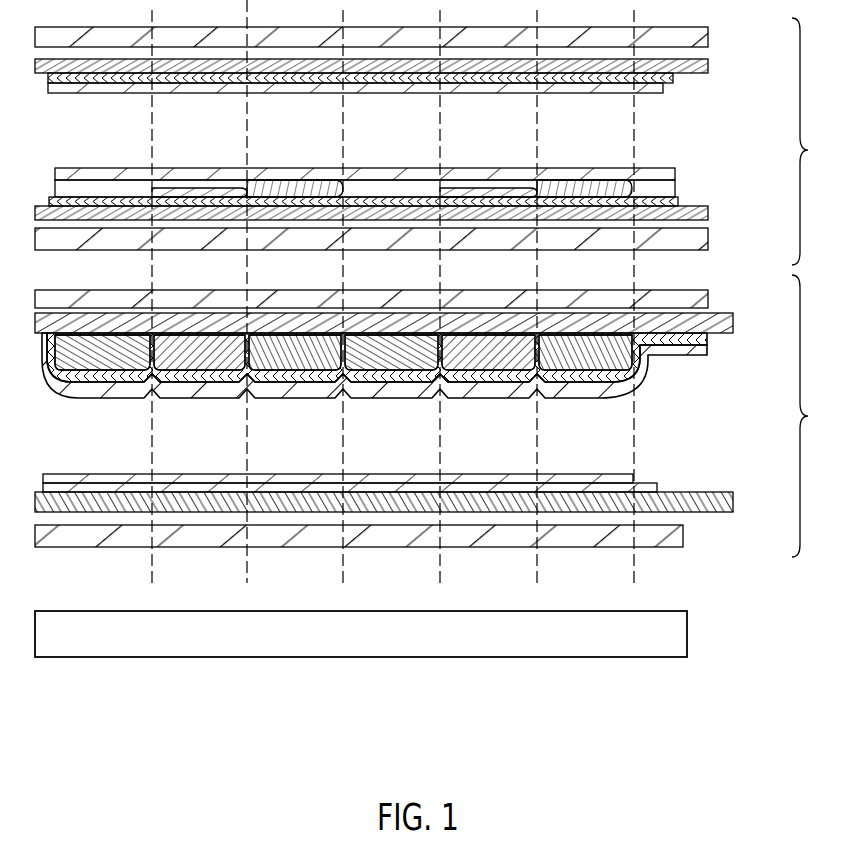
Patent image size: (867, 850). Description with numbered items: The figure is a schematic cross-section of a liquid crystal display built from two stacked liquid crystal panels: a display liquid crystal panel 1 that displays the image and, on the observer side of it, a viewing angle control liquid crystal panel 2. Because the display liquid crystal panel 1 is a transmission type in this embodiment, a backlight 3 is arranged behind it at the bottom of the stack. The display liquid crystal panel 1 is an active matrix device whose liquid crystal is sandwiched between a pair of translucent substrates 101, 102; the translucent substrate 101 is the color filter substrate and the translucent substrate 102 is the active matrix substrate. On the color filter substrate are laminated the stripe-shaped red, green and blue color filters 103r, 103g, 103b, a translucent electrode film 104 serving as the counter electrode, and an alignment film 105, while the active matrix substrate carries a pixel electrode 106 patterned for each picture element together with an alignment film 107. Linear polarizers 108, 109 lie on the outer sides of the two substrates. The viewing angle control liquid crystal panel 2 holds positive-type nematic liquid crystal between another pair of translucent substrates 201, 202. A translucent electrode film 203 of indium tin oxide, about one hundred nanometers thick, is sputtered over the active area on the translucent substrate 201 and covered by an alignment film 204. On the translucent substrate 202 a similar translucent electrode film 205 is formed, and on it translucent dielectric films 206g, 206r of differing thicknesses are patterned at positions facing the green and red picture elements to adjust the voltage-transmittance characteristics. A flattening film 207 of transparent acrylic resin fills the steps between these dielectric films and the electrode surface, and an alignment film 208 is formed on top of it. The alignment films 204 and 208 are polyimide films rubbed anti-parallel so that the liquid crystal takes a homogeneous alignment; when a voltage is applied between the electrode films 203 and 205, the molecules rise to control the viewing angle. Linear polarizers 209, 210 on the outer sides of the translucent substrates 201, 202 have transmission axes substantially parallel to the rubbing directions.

The display liquid crystal panel 1 is at (812, 416).
The viewing angle control liquid crystal panel 2 is at (811, 141).
The backlight 3 is at (687, 634).
The translucent substrate 101 is at (733, 323).
The translucent substrate 102 is at (733, 502).
The blue color filter 103b is at (100, 366).
The green color filter 103g is at (196, 366).
The red color filter 103r is at (292, 366).
The translucent electrode film 104 is at (645, 364).
The alignment film 105 is at (607, 391).
The pixel electrode 106 is at (624, 474).
The alignment film 107 is at (657, 487).
The linear polarizer 108 is at (708, 299).
The linear polarizer 109 is at (683, 536).
The translucent substrate 201 is at (700, 68).
The translucent substrate 202 is at (708, 213).
The translucent electrode film 203 is at (673, 78).
The alignment film 204 is at (663, 89).
The translucent electrode film 205 is at (678, 202).
The translucent dielectric film 206g is at (200, 188).
The translucent dielectric film 206r is at (302, 184).
The flattening film 207 is at (675, 188).
The alignment film 208 is at (675, 174).
The linear polarizer 209 is at (708, 37).
The linear polarizer 210 is at (708, 239).